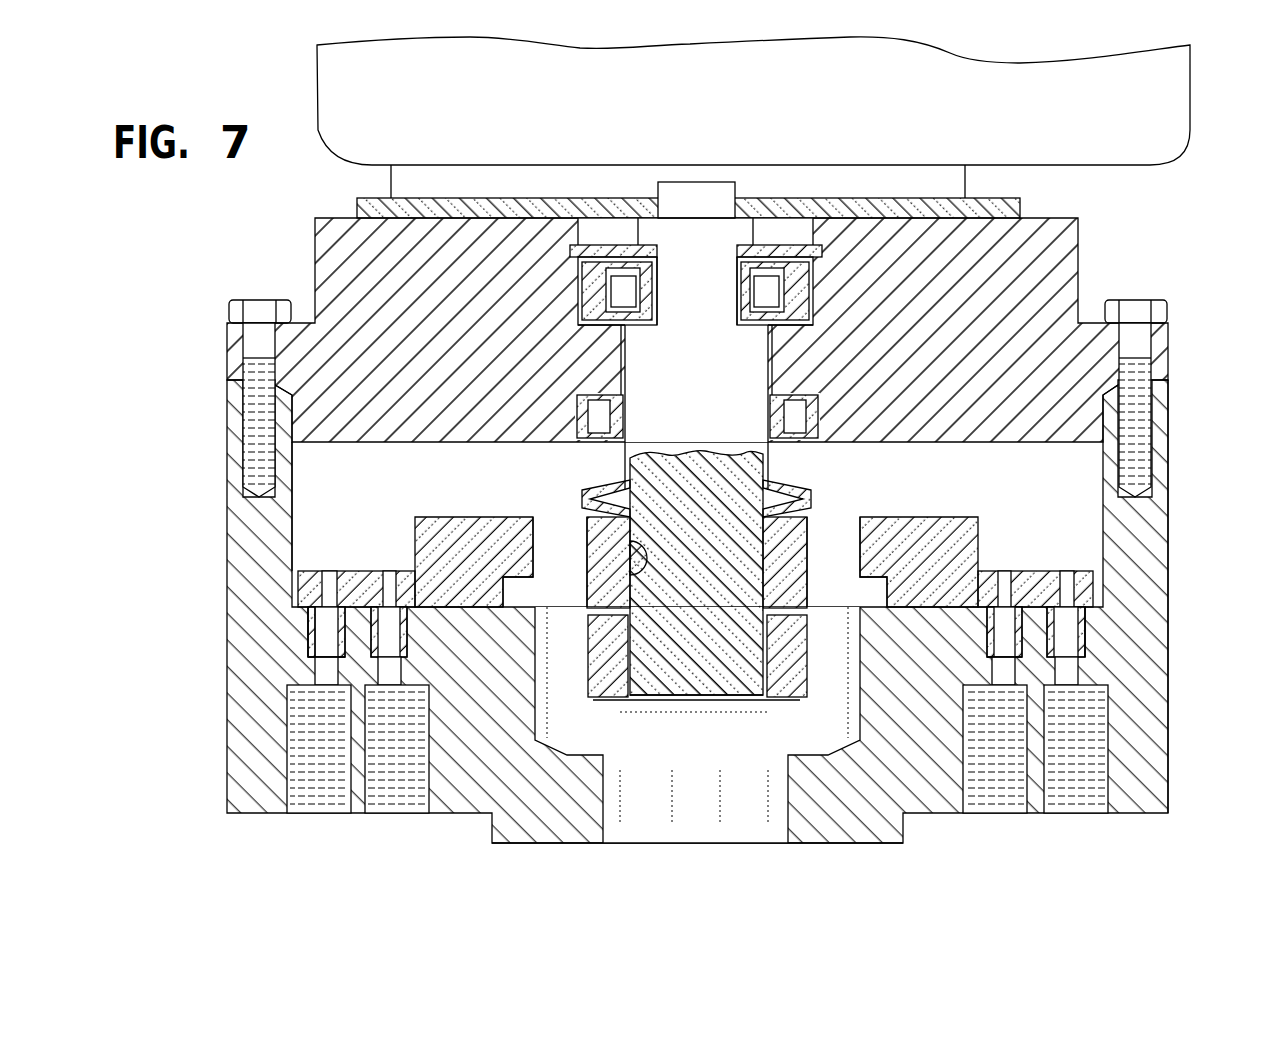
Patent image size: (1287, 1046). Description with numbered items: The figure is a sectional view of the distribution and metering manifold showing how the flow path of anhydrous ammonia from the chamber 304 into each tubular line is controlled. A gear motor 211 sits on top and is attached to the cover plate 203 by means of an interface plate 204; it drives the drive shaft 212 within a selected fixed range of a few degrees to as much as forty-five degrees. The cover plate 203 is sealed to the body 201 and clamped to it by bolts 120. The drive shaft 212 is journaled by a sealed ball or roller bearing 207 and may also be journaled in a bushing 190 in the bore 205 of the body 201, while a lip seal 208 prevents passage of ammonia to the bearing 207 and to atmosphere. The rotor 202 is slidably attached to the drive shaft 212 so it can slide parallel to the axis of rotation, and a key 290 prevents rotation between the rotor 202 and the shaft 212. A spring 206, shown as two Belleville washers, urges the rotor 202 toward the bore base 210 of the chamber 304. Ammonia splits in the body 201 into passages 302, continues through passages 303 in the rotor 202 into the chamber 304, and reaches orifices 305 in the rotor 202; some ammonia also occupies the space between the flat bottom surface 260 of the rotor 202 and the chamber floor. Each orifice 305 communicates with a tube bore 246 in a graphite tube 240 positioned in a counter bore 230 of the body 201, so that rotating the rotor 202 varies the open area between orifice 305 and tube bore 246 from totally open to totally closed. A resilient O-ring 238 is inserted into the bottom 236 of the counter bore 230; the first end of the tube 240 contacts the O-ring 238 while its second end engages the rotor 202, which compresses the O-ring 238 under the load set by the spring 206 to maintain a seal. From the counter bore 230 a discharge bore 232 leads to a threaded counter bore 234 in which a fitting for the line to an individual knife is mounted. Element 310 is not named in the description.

The bolts 120 is at (1137, 300).
The bushing 190 is at (640, 690).
The body 201 is at (1170, 742).
The rotor 202 is at (978, 534).
The cover plate 203 is at (1080, 257).
The interface plate 204 is at (1020, 208).
The bore 205 is at (775, 690).
The Belleville washer spring 206 is at (613, 492).
The sealed ball or roller bearing 207 is at (773, 292).
The lip seal 208 is at (822, 418).
The bore base 210 is at (843, 590).
The gear motor 211 is at (348, 103).
The drive shaft 212 is at (735, 690).
The counter bore 230 is at (310, 648).
The discharge bore 232 is at (327, 675).
The threaded counter bore 234 is at (318, 790).
The bottom of the counter bore 236 is at (387, 648).
The resilient O-ring 238 is at (328, 655).
The graphite tube 240 is at (398, 603).
The tube bore 246 is at (330, 603).
The flat bottom surface 260 is at (307, 632).
The key 290 is at (643, 558).
The passages 302 is at (550, 718).
The passages 303 is at (547, 525).
The chamber 304 is at (318, 513).
The orifices 305 is at (385, 603).
The passage 310 is at (512, 585).